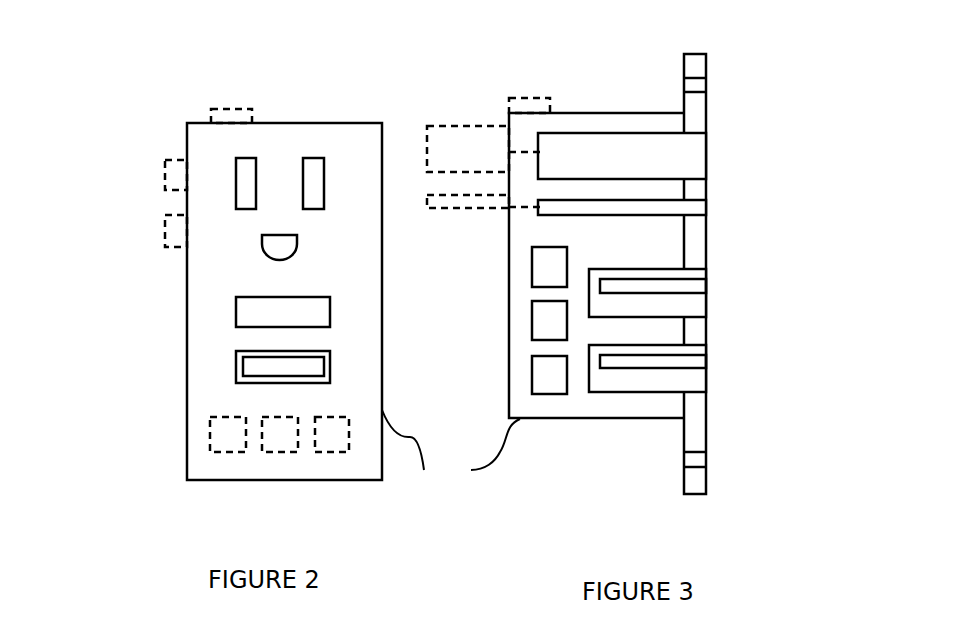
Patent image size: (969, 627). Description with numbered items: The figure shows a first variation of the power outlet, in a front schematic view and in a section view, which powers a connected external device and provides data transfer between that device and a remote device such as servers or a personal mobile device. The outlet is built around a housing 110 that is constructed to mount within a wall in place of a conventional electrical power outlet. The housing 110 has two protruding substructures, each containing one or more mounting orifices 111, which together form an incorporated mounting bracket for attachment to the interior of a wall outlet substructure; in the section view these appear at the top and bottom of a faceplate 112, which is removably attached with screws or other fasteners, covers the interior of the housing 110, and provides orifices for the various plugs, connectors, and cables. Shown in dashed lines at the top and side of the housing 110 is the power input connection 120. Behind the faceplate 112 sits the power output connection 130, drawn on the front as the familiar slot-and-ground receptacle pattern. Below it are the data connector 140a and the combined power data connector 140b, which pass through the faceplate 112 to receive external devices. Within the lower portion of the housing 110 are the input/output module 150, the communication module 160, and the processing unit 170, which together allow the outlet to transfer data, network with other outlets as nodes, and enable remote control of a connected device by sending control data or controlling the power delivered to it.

In FIG. 3, the housing 110 is at (557, 303).
In FIG. 3, the mounting orifices 111 is at (690, 74).
In FIG. 3, the faceplate 112 is at (708, 242).
In FIG. 2, the power input connection 120 is at (187, 126).
In FIG. 3, the power input connection 120 is at (468, 125).
In FIG. 2, the power output connection 130 is at (296, 147).
In FIG. 3, the power output connection 130 is at (708, 152).
In FIG. 2, the data connector 140a is at (233, 318).
In FIG. 3, the data connector 140a is at (708, 290).
In FIG. 2, the combined power data connector 140b is at (224, 382).
In FIG. 3, the combined power data connector 140b is at (722, 371).
In FIG. 2, the input/output module 150 is at (220, 455).
In FIG. 3, the input/output module 150 is at (530, 276).
In FIG. 2, the communication module 160 is at (277, 455).
In FIG. 3, the communication module 160 is at (530, 322).
In FIG. 2, the processing unit 170 is at (337, 455).
In FIG. 3, the processing unit 170 is at (530, 378).